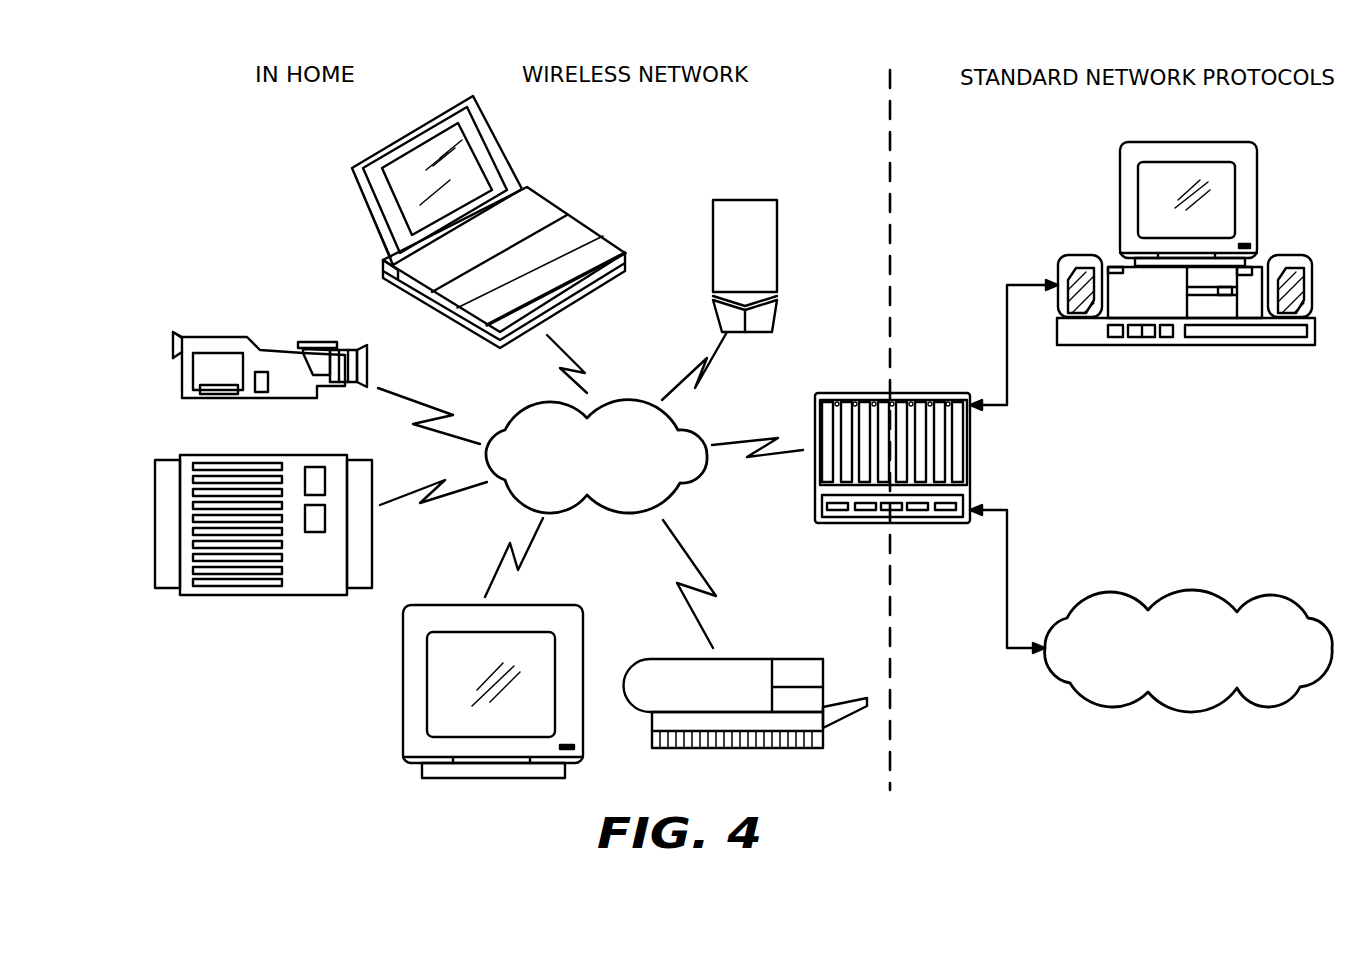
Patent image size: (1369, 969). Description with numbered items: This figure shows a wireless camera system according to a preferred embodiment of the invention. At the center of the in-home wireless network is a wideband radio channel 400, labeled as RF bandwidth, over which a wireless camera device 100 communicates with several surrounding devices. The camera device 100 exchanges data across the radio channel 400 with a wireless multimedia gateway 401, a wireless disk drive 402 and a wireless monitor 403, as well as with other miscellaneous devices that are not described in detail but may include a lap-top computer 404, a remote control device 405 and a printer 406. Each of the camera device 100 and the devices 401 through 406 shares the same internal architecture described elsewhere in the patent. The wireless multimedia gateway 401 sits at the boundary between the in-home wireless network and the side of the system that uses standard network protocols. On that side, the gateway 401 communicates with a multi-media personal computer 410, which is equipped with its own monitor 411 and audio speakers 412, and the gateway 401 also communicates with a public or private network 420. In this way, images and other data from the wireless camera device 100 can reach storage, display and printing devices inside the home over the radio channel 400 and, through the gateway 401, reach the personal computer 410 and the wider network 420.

The wireless camera device 100 is at (222, 337).
The wideband radio channel 400 is at (627, 400).
The wireless multimedia gateway 401 is at (925, 393).
The wireless disk drive 402 is at (253, 455).
The wireless monitor 403 is at (403, 735).
The lap-top computer 404 is at (505, 153).
The remote control device 405 is at (713, 242).
The printer 406 is at (745, 659).
The multi-media personal computer 410 is at (1257, 193).
The monitor 411 is at (1150, 200).
The audio speakers 412 is at (1312, 285).
The public or private network 420 is at (1177, 592).